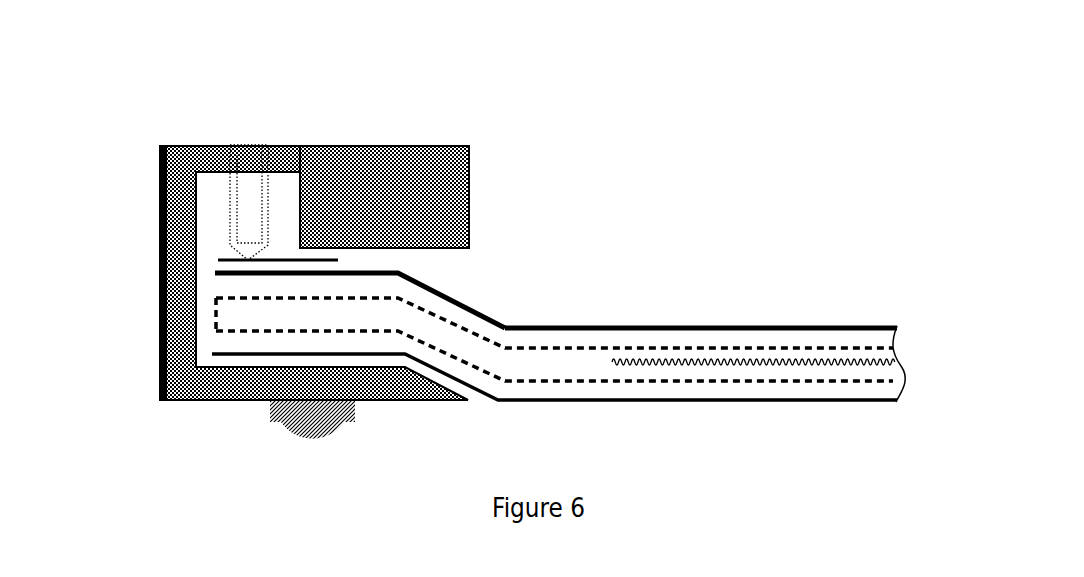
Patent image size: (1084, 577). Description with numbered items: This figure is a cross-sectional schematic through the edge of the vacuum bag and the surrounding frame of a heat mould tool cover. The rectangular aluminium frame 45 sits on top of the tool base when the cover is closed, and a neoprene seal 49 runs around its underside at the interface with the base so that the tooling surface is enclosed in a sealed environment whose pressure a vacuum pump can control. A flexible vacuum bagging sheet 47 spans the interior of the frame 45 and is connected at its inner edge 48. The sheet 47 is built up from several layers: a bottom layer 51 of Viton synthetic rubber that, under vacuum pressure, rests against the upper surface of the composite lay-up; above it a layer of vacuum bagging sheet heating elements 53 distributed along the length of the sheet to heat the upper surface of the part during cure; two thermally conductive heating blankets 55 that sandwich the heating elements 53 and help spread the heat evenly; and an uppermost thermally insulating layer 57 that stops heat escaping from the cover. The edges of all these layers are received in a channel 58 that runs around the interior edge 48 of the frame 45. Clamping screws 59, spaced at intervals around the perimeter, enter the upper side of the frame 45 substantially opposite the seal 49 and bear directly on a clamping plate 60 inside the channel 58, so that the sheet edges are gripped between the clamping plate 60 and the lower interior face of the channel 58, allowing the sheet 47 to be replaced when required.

The frame 45 is at (471, 138).
The vacuum bagging sheet 47 is at (852, 300).
The inner edge 48 is at (469, 190).
The neoprene seal 49 is at (297, 430).
The bottom layer 51 is at (673, 400).
The vacuum bagging sheet heating elements 53 is at (737, 362).
The thermally conductive heating blankets 55 is at (828, 348).
The thermally insulating layer 57 is at (640, 328).
The channel 58 is at (440, 272).
The clamping screw 59 is at (248, 178).
The clamping plate 60 is at (228, 260).